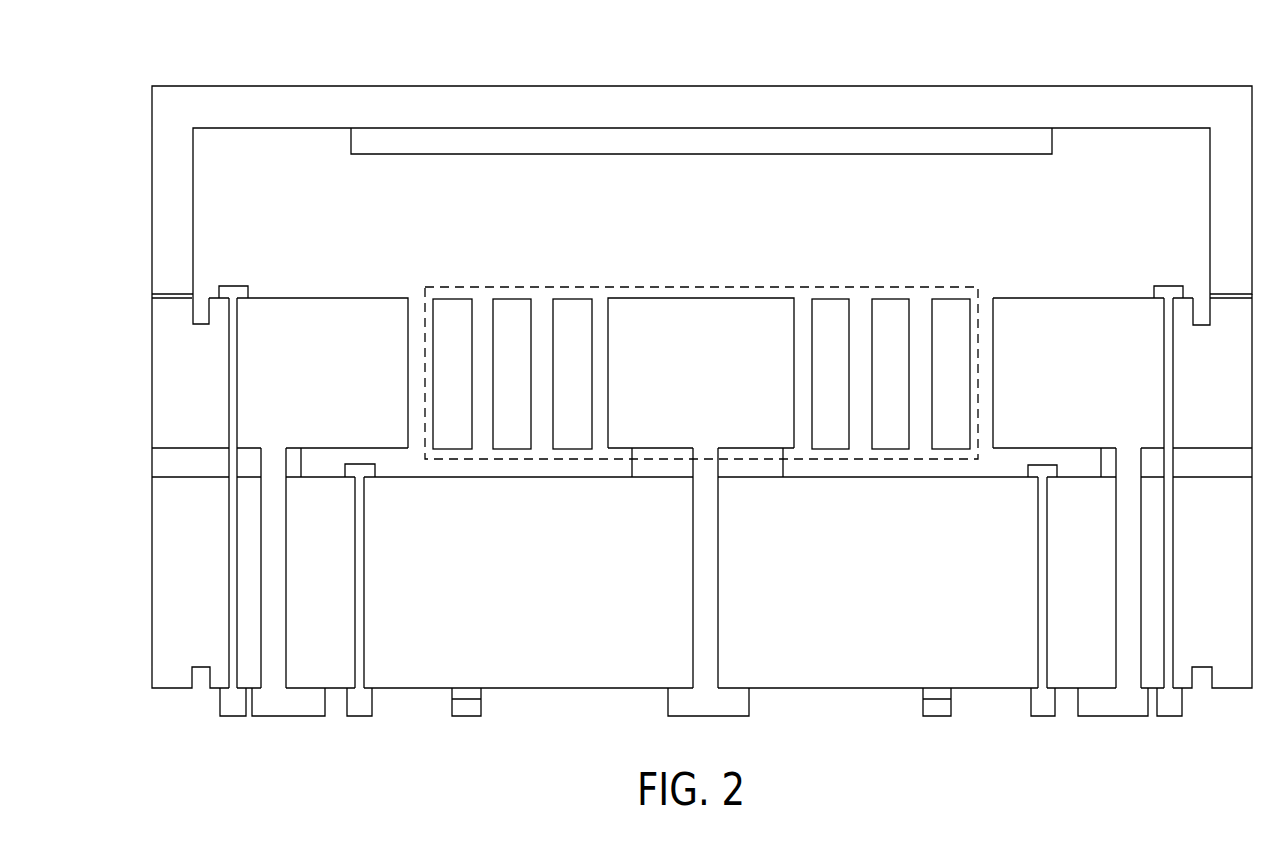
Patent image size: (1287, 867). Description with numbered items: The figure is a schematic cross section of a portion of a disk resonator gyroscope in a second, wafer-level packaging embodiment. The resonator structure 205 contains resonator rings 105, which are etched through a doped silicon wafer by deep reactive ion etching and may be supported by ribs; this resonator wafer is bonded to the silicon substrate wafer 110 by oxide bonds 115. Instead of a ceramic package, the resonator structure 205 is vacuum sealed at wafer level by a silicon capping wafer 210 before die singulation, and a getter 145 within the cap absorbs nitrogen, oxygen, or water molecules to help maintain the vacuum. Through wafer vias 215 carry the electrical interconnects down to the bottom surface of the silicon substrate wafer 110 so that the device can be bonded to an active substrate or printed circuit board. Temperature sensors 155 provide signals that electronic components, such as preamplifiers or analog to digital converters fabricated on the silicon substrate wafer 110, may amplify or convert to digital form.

The silicon capping wafer 210 is at (757, 86).
The getter 145 is at (351, 141).
The silicon substrate wafer 110 is at (555, 589).
The oxide bonds 115 is at (1200, 470).
The resonator structure 205 is at (697, 287).
The resonator rings 105 is at (452, 299).
The through wafer vias 215 is at (229, 393).
The temperature sensors 155 is at (233, 290).